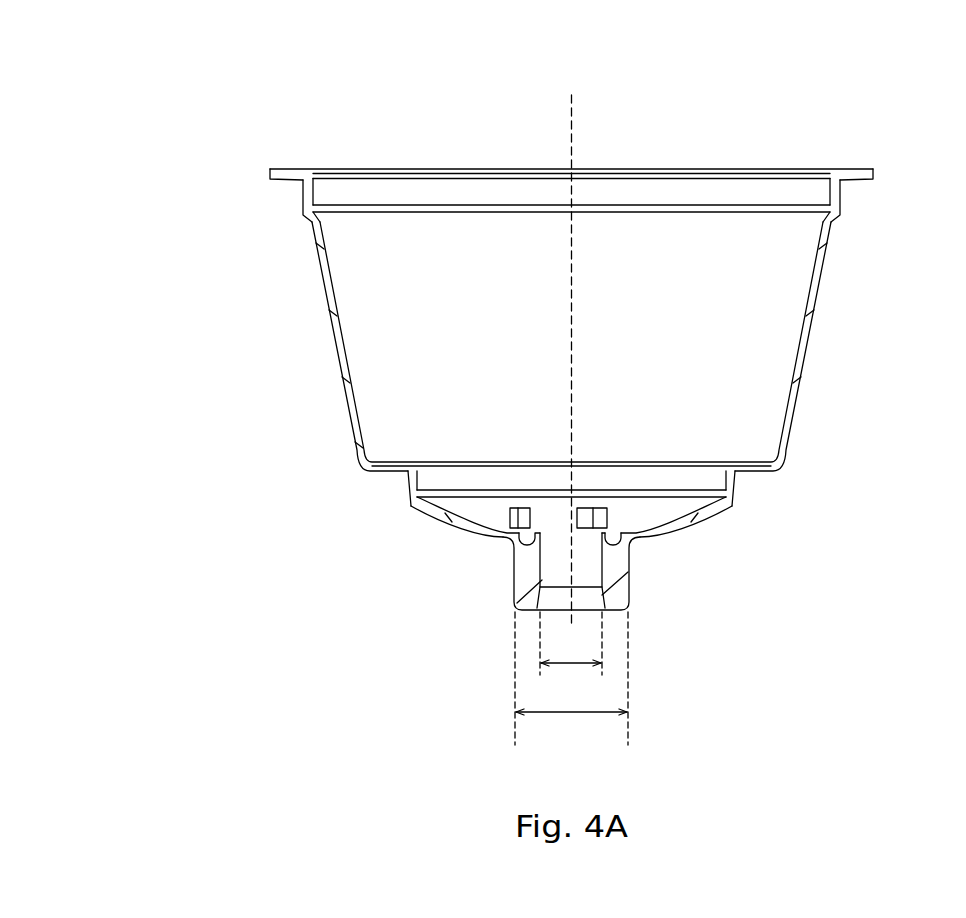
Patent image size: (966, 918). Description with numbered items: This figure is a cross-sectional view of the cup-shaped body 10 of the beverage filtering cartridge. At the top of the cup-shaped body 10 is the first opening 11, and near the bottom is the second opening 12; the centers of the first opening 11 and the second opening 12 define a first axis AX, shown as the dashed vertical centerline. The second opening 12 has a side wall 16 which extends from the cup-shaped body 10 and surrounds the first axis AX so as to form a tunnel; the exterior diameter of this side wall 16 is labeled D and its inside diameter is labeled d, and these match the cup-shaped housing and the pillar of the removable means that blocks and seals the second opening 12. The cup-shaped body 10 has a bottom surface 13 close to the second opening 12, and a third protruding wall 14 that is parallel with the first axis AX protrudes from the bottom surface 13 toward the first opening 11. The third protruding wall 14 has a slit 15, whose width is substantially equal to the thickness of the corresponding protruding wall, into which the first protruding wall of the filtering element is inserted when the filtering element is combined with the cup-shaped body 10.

The cup-shaped body 10 is at (80, 67).
The first opening 11 is at (577, 178).
The second opening 12 is at (585, 600).
The bottom surface 13 is at (612, 530).
The third protruding wall 14 is at (510, 524).
The slit 15 is at (595, 508).
The side wall 16 is at (512, 570).
The first axis AX is at (571, 115).